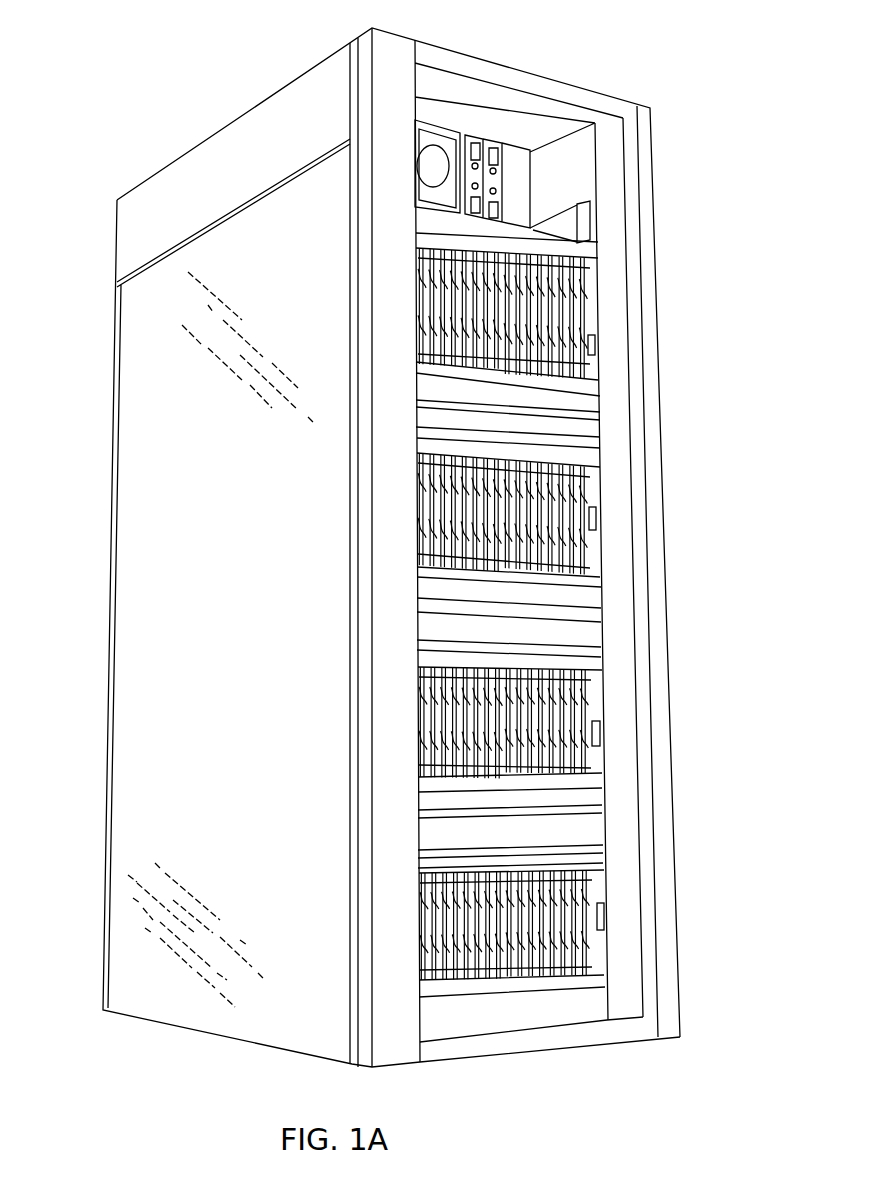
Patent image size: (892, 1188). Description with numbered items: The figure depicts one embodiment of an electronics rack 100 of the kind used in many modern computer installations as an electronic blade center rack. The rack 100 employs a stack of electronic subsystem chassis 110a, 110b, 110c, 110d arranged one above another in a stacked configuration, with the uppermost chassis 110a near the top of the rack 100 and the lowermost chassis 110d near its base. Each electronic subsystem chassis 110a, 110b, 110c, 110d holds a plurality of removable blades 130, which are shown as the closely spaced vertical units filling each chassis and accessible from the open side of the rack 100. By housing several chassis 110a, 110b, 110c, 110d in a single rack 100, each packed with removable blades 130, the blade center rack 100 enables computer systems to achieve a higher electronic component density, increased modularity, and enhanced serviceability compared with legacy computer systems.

The rack 100 is at (217, 113).
The removable blade 130 is at (418, 316).
The electronic subsystem chassis 110a is at (582, 253).
The electronic subsystem chassis 110b is at (583, 440).
The electronic subsystem chassis 110c is at (592, 800).
The electronic subsystem chassis 110d is at (582, 1000).